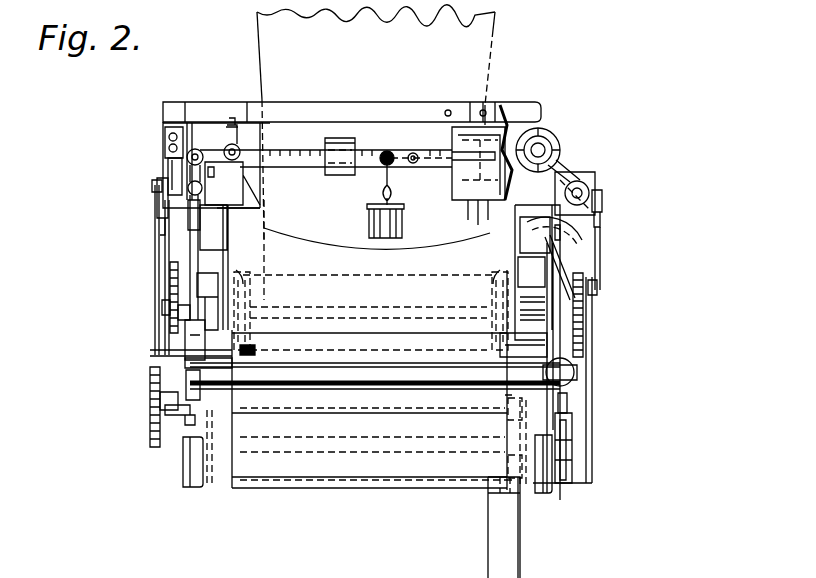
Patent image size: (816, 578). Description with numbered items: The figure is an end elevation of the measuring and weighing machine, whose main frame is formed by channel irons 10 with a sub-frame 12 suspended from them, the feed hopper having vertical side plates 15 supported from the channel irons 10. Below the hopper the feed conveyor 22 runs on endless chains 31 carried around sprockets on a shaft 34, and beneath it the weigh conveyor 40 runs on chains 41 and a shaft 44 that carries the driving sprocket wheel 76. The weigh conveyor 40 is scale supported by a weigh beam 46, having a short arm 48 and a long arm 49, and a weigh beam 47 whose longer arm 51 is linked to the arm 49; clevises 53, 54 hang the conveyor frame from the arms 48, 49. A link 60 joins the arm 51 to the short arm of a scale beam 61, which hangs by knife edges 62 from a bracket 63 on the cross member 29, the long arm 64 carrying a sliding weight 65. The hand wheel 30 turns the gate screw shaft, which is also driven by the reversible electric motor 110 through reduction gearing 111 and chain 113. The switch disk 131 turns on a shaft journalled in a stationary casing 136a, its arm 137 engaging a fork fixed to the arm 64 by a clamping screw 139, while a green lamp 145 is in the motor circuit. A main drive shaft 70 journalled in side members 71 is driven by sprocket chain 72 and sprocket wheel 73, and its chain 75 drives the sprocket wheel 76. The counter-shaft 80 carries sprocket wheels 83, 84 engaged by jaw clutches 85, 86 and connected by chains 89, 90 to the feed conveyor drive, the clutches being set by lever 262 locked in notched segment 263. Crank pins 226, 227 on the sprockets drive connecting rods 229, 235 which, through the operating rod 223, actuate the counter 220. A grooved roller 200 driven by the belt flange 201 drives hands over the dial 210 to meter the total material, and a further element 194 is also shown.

The channel irons 10 is at (226, 227).
The sub-frame 12 is at (183, 471).
The vertical side plates 15 is at (264, 217).
The feed conveyor 22 is at (330, 268).
The cross member 29 is at (297, 114).
The hand wheel 30 is at (558, 138).
The endless chains 31 is at (244, 272).
The shaft 34 is at (380, 311).
The weigh conveyor 40 is at (305, 488).
The chains 41 is at (207, 490).
The shaft 44 is at (332, 444).
The weigh beam 46 is at (364, 391).
The weigh beam 47 is at (252, 351).
The short arm 48 is at (575, 372).
The long arm 49 is at (188, 364).
The longer arm 51 is at (185, 351).
The clevis 53 is at (570, 410).
The clevis 54 is at (188, 395).
The link 60 is at (200, 279).
The scale beam 61 is at (305, 162).
The knife edges 62 is at (252, 160).
The bracket 63 is at (230, 133).
The long arm 64 is at (352, 170).
The sliding weight 65 is at (340, 182).
The main drive shaft 70 is at (172, 416).
The side members 71 is at (260, 245).
The sprocket chain 72 is at (148, 299).
The sprocket wheel 73 is at (150, 393).
The chain 75 is at (573, 428).
The driving sprocket wheel 76 is at (575, 468).
The counter-shaft 80 is at (530, 290).
The sprocket wheel 83 is at (586, 302).
The sprocket wheel 84 is at (170, 319).
The jaw clutch 85 is at (552, 346).
The jaw clutch 86 is at (188, 262).
The chain 89 is at (560, 272).
The chain 90 is at (165, 262).
The reversible electric motor 110 is at (520, 215).
The reduction gearing 111 is at (590, 178).
The chain 113 is at (578, 165).
The rotatable support 131 is at (500, 130).
The stationary casing 136a is at (454, 200).
The arm 137 is at (466, 168).
The clamping screw 139 is at (413, 153).
The electric lamp 145 is at (166, 152).
The screw 194 is at (166, 138).
The grooved roller 200 is at (520, 525).
The flange 201 is at (507, 401).
The dial 210 is at (520, 548).
The counter 220 is at (170, 175).
The operating rod 223 is at (160, 183).
The crank pin 226 is at (598, 288).
The crank pin 227 is at (170, 280).
The connecting rod 229 is at (600, 251).
The connecting rod 235 is at (157, 238).
The lever 262 is at (603, 193).
The notched segment 263 is at (580, 233).